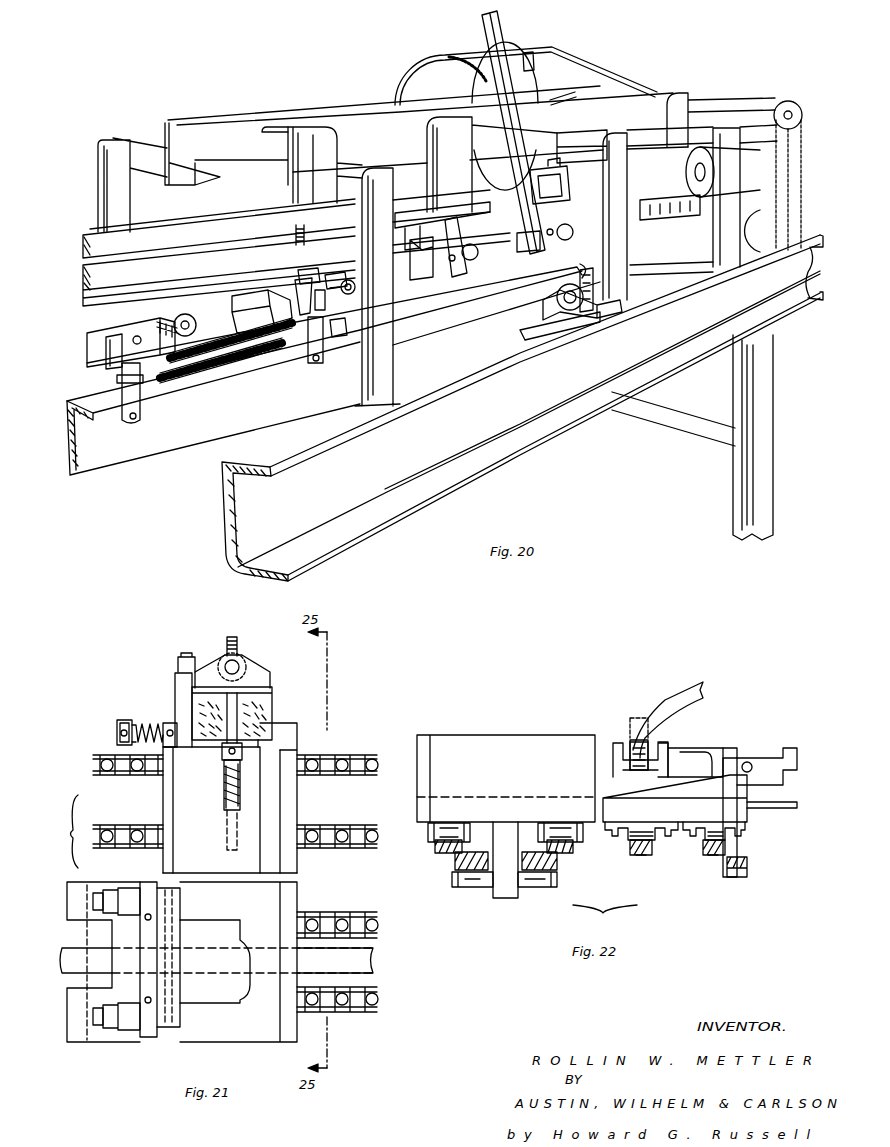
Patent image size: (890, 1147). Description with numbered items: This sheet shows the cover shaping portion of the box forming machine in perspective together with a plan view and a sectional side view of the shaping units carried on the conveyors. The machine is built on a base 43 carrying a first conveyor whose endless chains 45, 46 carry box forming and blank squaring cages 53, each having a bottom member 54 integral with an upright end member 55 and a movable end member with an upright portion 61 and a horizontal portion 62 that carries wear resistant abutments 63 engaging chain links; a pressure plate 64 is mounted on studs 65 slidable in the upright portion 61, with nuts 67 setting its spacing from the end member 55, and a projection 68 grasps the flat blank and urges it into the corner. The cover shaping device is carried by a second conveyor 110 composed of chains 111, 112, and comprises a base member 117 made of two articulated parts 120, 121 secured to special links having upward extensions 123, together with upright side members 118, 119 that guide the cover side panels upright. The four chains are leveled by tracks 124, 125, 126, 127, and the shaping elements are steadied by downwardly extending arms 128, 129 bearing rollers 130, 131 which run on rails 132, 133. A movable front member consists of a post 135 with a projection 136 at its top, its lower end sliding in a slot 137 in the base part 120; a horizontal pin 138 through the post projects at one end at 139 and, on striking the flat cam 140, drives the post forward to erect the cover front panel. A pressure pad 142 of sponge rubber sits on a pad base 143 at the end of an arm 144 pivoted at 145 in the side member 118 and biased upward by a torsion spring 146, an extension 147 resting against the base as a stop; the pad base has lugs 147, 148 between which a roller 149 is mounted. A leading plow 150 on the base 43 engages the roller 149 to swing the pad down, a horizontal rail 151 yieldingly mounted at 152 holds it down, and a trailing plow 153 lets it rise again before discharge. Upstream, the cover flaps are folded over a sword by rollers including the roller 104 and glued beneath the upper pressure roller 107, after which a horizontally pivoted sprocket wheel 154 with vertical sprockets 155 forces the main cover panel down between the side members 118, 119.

In FIG. 20, the base 43 is at (478, 428).
In FIG. 21, the endless chain 45 is at (335, 1014).
In FIG. 22, the endless chain 45 is at (452, 832).
In FIG. 21, the endless chain 46 is at (333, 914).
In FIG. 22, the endless chain 46 is at (560, 832).
In FIG. 22, the box forming and blank squaring cage 53 is at (514, 728).
In FIG. 21, the bottom member 54 is at (262, 1027).
In FIG. 21, the end member 55 is at (280, 918).
In FIG. 22, the end member 55 is at (518, 772).
In FIG. 21, the upright portion 61 is at (150, 888).
In FIG. 21, the horizontal portion 62 is at (107, 950).
In FIG. 21, the wear resistant abutment 63 is at (75, 926).
In FIG. 21, the pressure plate 64 is at (176, 900).
In FIG. 21, the stud 65 is at (98, 892).
In FIG. 21, the nut 67 is at (114, 890).
In FIG. 21, the projection 68 is at (161, 940).
In FIG. 20, the roller 104 is at (782, 157).
In FIG. 20, the upper pressure roller 107 is at (690, 162).
In FIG. 20, the second conveyor 110 is at (183, 375).
In FIG. 21, the endless chain 111 is at (334, 850).
In FIG. 22, the endless chain 111 is at (631, 848).
In FIG. 21, the endless chain 112 is at (333, 777).
In FIG. 22, the endless chain 112 is at (705, 850).
In FIG. 21, the base member 117 is at (225, 849).
In FIG. 21, the side member 118 is at (168, 786).
In FIG. 20, the side member 119 is at (262, 311).
In FIG. 21, the side member 119 is at (288, 784).
In FIG. 22, the side member 119 is at (700, 794).
In FIG. 21, the base part 120 is at (206, 844).
In FIG. 21, the base part 121 is at (272, 813).
In FIG. 22, the upward extension 123 is at (622, 824).
In FIG. 22, the track 124 is at (441, 855).
In FIG. 22, the track 125 is at (566, 856).
In FIG. 22, the track 126 is at (641, 857).
In FIG. 22, the track 127 is at (712, 857).
In FIG. 22, the downwardly extending arm 128 is at (507, 898).
In FIG. 20, the downwardly extending arm 129 is at (140, 420).
In FIG. 21, the downwardly extending arm 129 is at (178, 664).
In FIG. 22, the roller 130 is at (482, 888).
In FIG. 22, the roller 131 is at (742, 880).
In FIG. 22, the rail 132 is at (455, 862).
In FIG. 20, the rail 133 is at (250, 372).
In FIG. 20, the post 135 is at (322, 292).
In FIG. 21, the post 135 is at (220, 759).
In FIG. 22, the post 135 is at (748, 763).
In FIG. 22, the projection 136 is at (735, 757).
In FIG. 21, the slot 137 is at (224, 793).
In FIG. 21, the horizontal pin 138 is at (226, 804).
In FIG. 21, the projecting portion 139 is at (240, 648).
In FIG. 22, the projecting portion 139 is at (790, 810).
In FIG. 20, the flat cam 140 is at (333, 332).
In FIG. 21, the pressure pad 142 is at (268, 716).
In FIG. 21, the pad base 143 is at (272, 688).
In FIG. 22, the pad base 143 is at (615, 750).
In FIG. 20, the arm 144 is at (332, 292).
In FIG. 21, the arm 144 is at (176, 683).
In FIG. 22, the arm 144 is at (718, 750).
In FIG. 22, the pivot 145 is at (752, 768).
In FIG. 20, the torsion spring 146 is at (356, 287).
In FIG. 21, the torsion spring 146 is at (156, 720).
In FIG. 22, the extension 147 is at (785, 751).
In FIG. 22, the lug 148 is at (670, 748).
In FIG. 20, the roller 149 is at (562, 188).
In FIG. 22, the roller 149 is at (650, 745).
In FIG. 20, the leading plow 150 is at (490, 195).
In FIG. 20, the horizontal rail 151 is at (219, 252).
In FIG. 22, the horizontal rail 151 is at (638, 715).
In FIG. 20, the yielding mounting 152 is at (295, 230).
In FIG. 22, the trailing plow 153 is at (678, 680).
In FIG. 20, the sprocket wheel 154 is at (526, 116).
In FIG. 20, the sprocket 155 is at (498, 24).